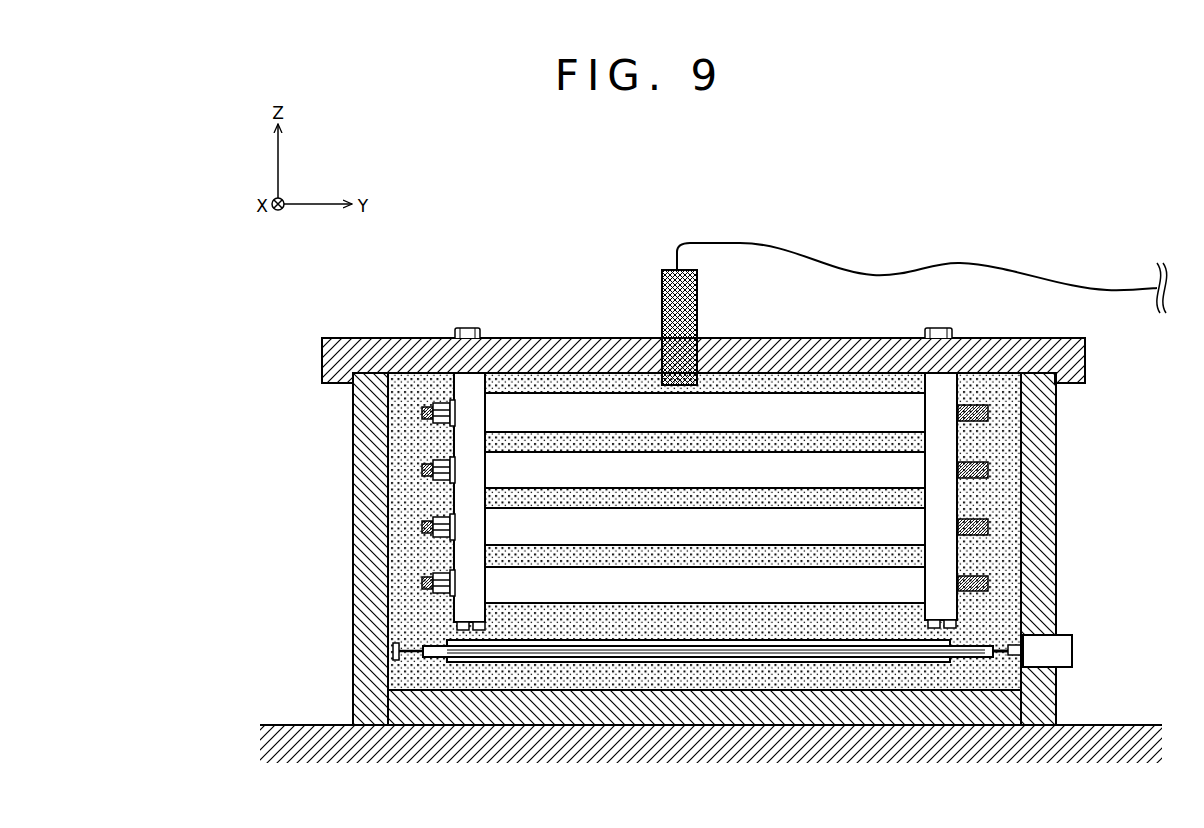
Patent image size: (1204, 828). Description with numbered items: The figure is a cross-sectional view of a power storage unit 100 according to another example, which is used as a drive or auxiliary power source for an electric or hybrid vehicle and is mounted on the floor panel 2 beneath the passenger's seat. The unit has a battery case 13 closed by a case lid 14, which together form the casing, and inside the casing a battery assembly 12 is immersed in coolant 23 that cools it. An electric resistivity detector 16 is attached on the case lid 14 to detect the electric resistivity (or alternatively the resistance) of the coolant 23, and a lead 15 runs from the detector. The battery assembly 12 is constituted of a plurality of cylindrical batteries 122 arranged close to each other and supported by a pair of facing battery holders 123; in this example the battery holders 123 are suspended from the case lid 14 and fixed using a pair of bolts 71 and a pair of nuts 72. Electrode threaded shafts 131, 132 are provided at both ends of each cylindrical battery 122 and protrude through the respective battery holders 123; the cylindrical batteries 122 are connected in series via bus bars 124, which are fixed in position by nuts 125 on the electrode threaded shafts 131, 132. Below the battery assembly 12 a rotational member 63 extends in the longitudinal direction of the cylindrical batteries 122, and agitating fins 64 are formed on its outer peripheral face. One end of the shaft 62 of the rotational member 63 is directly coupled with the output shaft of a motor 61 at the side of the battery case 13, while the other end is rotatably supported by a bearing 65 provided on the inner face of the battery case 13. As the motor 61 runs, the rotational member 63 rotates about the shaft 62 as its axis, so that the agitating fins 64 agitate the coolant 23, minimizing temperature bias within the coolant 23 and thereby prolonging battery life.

The power storage unit 100 is at (942, 212).
The floor panel 2 is at (1125, 727).
The battery assembly 12 is at (993, 489).
The battery case 13 is at (1040, 553).
The case lid 14 is at (1077, 352).
The cable 15 is at (857, 270).
The electric resistivity detector 16 is at (662, 295).
The coolant 23 is at (1005, 610).
The motor 61 is at (1060, 650).
The shaft 62 is at (1000, 656).
The rotational member 63 is at (970, 657).
The agitating fins 64 is at (776, 662).
The bearing 65 is at (395, 662).
The bolts 71 is at (466, 326).
The nuts 72 is at (456, 630).
The cylindrical batteries 122 is at (868, 528).
The battery holders 123 is at (945, 450).
The bus bars 124 is at (449, 497).
The nuts 125 is at (446, 421).
The electrode threaded shaft 131 is at (422, 413).
The electrode threaded shaft 132 is at (988, 411).